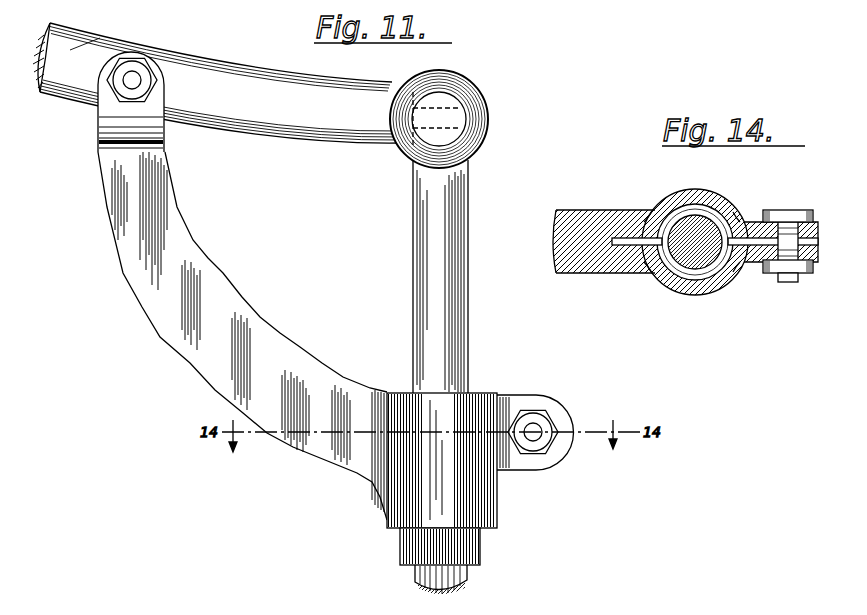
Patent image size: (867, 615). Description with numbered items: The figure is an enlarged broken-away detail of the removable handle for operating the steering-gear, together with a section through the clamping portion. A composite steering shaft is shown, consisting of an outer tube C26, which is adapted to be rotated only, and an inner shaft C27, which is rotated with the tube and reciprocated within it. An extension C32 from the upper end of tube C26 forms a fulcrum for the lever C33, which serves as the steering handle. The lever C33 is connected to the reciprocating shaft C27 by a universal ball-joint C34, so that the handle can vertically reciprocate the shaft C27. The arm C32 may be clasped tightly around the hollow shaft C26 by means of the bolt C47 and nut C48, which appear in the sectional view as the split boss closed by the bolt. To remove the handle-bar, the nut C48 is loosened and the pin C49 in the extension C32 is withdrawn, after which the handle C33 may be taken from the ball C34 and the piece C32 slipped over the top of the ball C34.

In FIG. 11, the lever C33 is at (83, 55).
In FIG. 11, the pin C49 is at (134, 78).
In FIG. 11, the universal ball-joint C34 is at (488, 73).
In FIG. 11, the reciprocating shaft C27 is at (450, 313).
In FIG. 14, the reciprocating shaft C27 is at (697, 262).
In FIG. 11, the extension C32 is at (170, 332).
In FIG. 14, the extension C32 is at (573, 275).
In FIG. 11, the nut C48 is at (538, 422).
In FIG. 14, the nut C48 is at (795, 267).
In FIG. 11, the tube C26 is at (413, 546).
In FIG. 14, the tube C26 is at (672, 275).
In FIG. 14, the bolt C47 is at (800, 199).